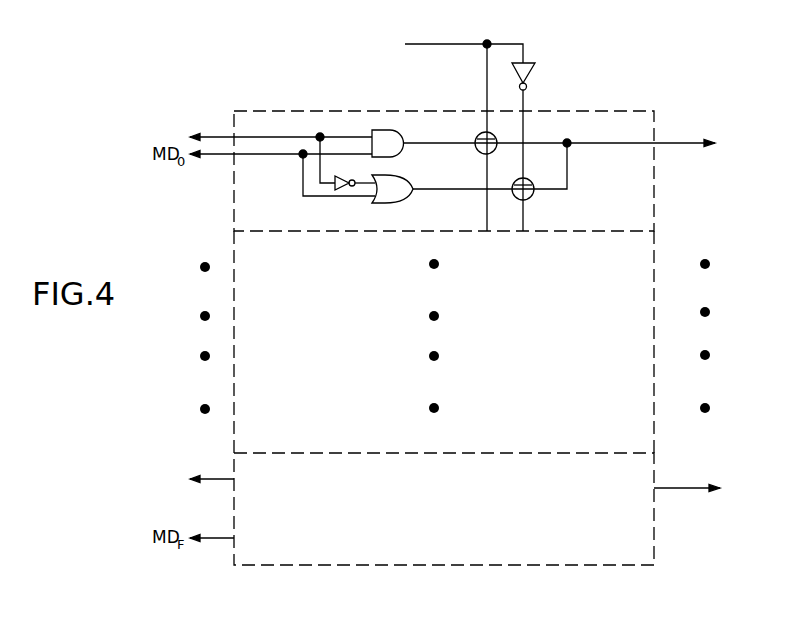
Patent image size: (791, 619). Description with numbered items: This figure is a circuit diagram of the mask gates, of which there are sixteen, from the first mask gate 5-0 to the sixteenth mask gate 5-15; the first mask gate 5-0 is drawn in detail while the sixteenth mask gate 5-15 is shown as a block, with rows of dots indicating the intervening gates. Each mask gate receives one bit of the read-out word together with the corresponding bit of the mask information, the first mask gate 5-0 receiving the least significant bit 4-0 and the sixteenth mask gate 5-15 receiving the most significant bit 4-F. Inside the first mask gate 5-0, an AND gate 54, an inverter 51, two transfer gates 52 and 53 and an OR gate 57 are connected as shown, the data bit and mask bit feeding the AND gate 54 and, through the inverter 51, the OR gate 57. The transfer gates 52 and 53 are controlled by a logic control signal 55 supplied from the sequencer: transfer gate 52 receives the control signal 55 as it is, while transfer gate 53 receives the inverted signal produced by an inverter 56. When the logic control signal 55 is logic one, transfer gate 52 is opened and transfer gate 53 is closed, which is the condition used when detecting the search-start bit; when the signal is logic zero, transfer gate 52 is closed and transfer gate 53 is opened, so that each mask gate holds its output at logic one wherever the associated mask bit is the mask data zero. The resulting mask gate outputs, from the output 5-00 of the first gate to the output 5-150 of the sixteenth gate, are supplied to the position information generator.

The inverter 51 is at (341, 176).
The transfer gate 52 is at (478, 152).
The transfer gate 53 is at (530, 198).
The AND gate 54 is at (400, 131).
The logic control signal 55 is at (450, 132).
The inverter 56 is at (535, 74).
The OR gate 57 is at (405, 200).
The first mask gate 5-0 is at (590, 111).
The sixteenth mask gate 5-15 is at (603, 565).
The mask gate output 5-00 is at (562, 132).
The mask gate output 5-150 is at (691, 477).
The least significant bit of mask information 4-0 is at (262, 137).
The most significant bit of mask information 4-F is at (193, 479).